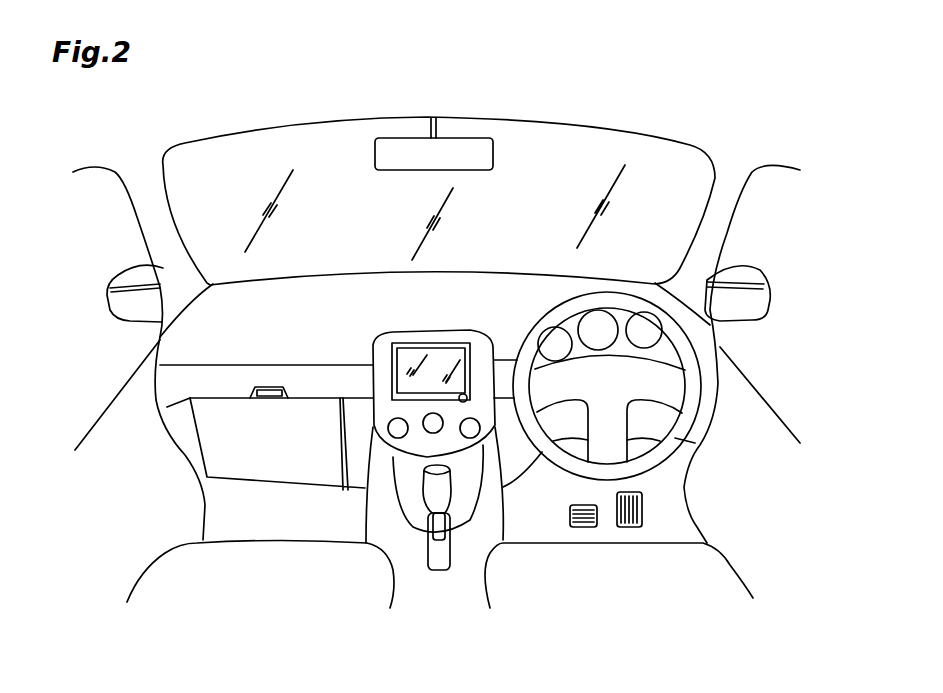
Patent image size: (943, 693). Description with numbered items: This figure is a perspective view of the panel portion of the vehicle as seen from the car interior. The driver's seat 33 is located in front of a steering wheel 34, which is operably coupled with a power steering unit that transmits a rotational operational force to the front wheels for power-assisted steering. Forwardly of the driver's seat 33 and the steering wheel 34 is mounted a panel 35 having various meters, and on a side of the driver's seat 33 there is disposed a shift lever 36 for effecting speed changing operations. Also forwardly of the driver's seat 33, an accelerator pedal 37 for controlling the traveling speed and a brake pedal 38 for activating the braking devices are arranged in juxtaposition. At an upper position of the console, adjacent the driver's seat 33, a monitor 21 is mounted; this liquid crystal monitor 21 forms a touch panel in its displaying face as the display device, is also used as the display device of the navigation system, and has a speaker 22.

The monitor 21 is at (403, 358).
The speaker 22 is at (477, 402).
The driver's seat 33 is at (713, 580).
The steering wheel 34 is at (693, 388).
The panel 35 is at (575, 333).
The shift lever 36 is at (422, 485).
The accelerator pedal 37 is at (643, 515).
The brake pedal 38 is at (570, 511).